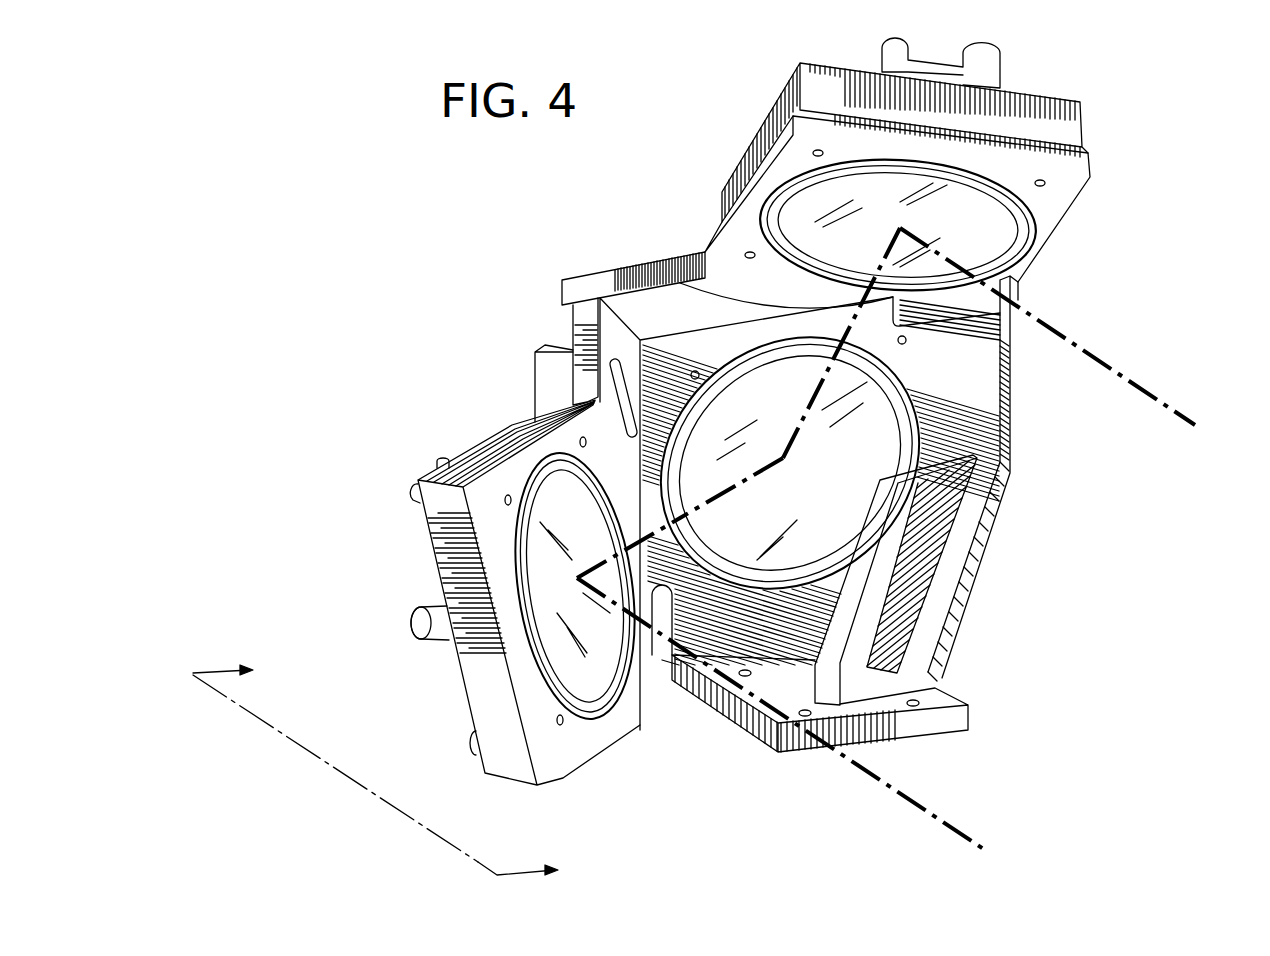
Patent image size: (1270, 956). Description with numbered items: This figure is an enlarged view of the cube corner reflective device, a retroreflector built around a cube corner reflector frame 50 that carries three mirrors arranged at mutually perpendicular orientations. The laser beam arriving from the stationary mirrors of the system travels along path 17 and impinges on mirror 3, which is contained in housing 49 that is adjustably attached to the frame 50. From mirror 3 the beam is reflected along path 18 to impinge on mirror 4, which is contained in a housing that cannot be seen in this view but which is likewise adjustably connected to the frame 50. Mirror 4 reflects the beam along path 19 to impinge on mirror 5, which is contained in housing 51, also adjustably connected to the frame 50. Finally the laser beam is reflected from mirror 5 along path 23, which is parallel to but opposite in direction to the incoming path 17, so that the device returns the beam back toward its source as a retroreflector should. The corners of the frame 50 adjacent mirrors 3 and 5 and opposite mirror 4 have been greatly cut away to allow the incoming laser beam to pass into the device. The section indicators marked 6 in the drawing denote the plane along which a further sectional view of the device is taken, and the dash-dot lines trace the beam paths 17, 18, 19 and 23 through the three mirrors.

The mirror 3 is at (966, 222).
The mirror 4 is at (849, 485).
The mirror 5 is at (577, 523).
The section line 6- 6 is at (387, 768).
The path 17 is at (1180, 412).
The path 18 is at (673, 283).
The path 19 is at (700, 487).
The path 23 is at (970, 837).
The housing 49 is at (1055, 103).
The cube corner reflector frame 50 is at (572, 287).
The housing 51 is at (437, 512).